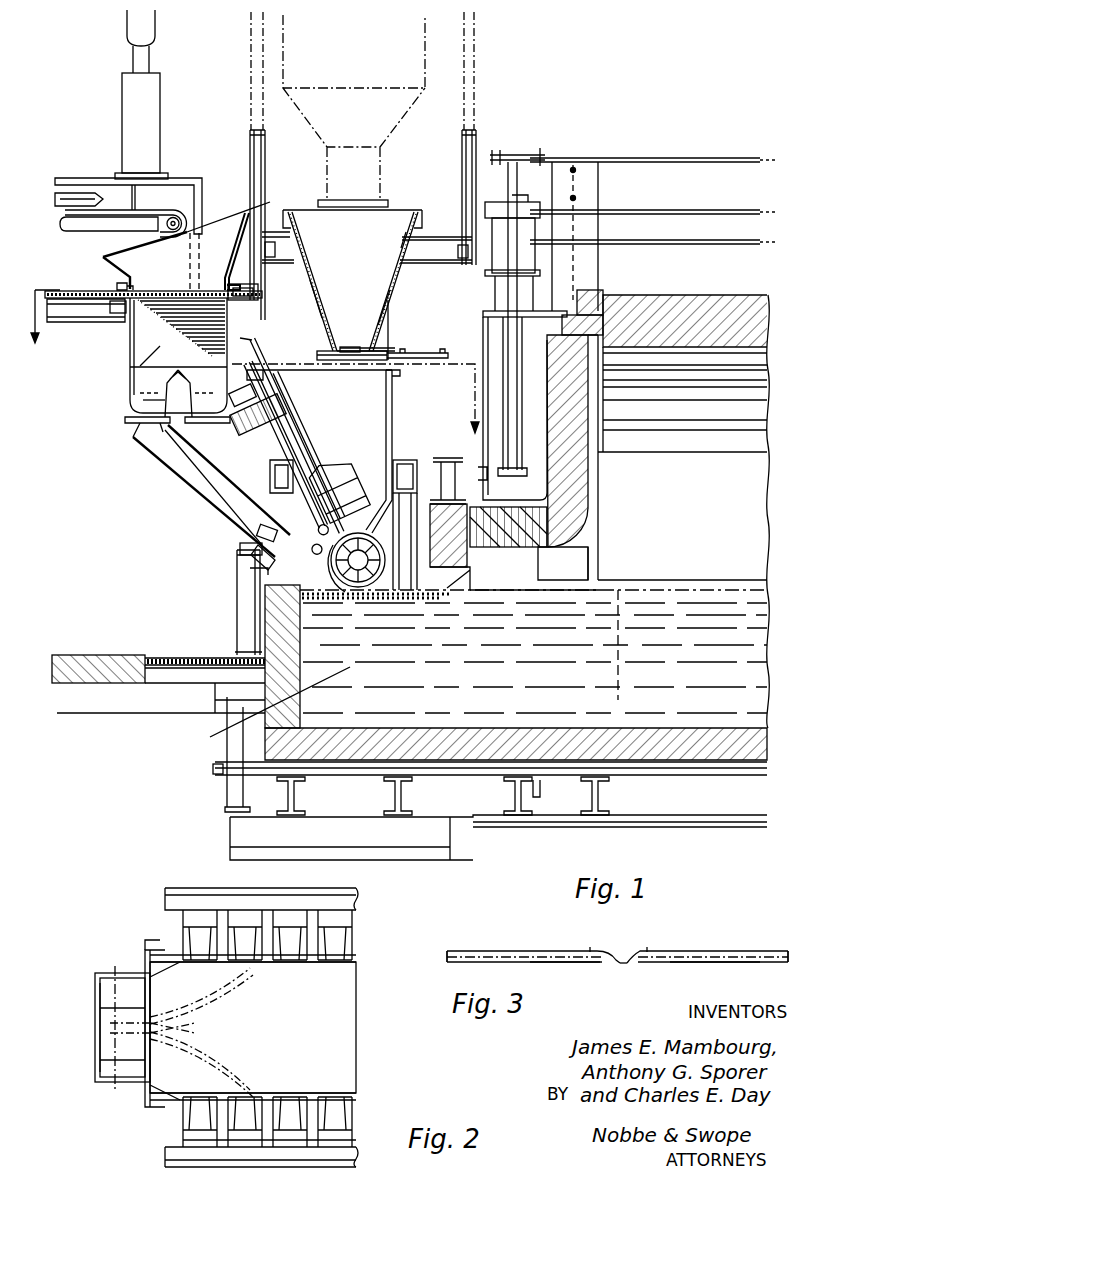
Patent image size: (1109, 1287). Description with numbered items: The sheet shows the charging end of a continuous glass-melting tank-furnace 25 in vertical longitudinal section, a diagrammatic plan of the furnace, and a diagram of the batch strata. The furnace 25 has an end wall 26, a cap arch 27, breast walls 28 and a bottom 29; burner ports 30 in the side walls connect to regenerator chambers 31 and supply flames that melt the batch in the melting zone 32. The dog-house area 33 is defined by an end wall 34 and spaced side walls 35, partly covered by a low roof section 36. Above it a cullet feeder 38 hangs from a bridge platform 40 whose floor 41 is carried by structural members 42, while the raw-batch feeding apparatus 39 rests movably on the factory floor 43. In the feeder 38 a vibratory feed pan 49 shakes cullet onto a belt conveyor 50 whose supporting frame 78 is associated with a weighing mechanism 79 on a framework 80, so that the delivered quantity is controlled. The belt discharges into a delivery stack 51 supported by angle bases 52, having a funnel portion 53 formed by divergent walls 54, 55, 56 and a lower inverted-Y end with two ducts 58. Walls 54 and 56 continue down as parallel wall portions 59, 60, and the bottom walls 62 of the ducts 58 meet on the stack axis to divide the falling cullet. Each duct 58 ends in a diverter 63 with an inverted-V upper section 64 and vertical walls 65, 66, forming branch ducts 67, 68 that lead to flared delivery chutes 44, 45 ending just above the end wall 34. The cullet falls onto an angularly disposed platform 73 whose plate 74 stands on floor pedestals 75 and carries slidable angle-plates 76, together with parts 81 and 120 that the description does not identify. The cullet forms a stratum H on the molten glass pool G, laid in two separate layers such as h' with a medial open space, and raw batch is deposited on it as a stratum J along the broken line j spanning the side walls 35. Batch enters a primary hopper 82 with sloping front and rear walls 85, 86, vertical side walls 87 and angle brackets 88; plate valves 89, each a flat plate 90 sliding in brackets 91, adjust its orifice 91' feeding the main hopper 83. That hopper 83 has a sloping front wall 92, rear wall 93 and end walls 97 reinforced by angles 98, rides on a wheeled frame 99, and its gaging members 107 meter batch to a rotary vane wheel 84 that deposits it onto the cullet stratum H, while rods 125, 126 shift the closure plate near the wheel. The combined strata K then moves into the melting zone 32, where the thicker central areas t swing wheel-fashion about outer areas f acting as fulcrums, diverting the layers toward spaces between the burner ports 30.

In FIG. 1, the tank-furnace 25 is at (639, 188).
In FIG. 2, the tank-furnace 25 is at (134, 917).
In FIG. 1, the end wall 26 is at (575, 455).
In FIG. 1, the cap arch 27 is at (678, 314).
In FIG. 1, the breast wall 28 is at (645, 582).
In FIG. 2, the breast wall 28 is at (158, 955).
In FIG. 1, the floor or bottom 29 is at (680, 756).
In FIG. 2, the burner ports 30 is at (197, 942).
In FIG. 2, the regenerator chambers 31 is at (215, 893).
In FIG. 1, the melting zone 32 is at (740, 574).
In FIG. 2, the melting zone 32 is at (325, 1032).
In FIG. 1, the dog-house area 33 is at (284, 628).
In FIG. 2, the dog-house area 33 is at (90, 975).
In FIG. 1, the end wall 34 is at (275, 646).
In FIG. 2, the end wall 34 is at (98, 990).
In FIG. 1, the side walls 35 is at (457, 587).
In FIG. 2, the side walls 35 is at (104, 975).
In FIG. 1, the low roof section 36 is at (497, 522).
In FIG. 1, the glass cullet feeder 38 is at (114, 361).
In FIG. 1, the feeding apparatus 39 is at (430, 397).
In FIG. 1, the bridge platform 40 is at (75, 312).
In FIG. 1, the floor 41 is at (88, 292).
In FIG. 1, the structural members 42 is at (262, 303).
In FIG. 1, the factory floor 43 is at (86, 655).
In FIG. 1, the delivery chute 44 is at (222, 470).
In FIG. 1, the delivery chute 45 is at (212, 496).
In FIG. 1, the vibratory feed pan 49 is at (78, 194).
In FIG. 1, the belt conveyor 50 is at (171, 218).
In FIG. 1, the delivery stack 51 is at (214, 250).
In FIG. 1, the angle bases 52 is at (118, 286).
In FIG. 1, the funnel portion 53 is at (230, 236).
In FIG. 1, the wall 54 is at (103, 257).
In FIG. 1, the wall 55 is at (205, 232).
In FIG. 1, the wall 56 is at (270, 202).
In FIG. 1, the leg sections or ducts 58 is at (150, 356).
In FIG. 1, the wall portion 59 is at (132, 336).
In FIG. 1, the wall portion 60 is at (242, 340).
In FIG. 1, the bottom walls 62 is at (138, 394).
In FIG. 1, the diverter 63 is at (128, 421).
In FIG. 1, the upper section 64 is at (180, 372).
In FIG. 1, the wall 65 is at (141, 401).
In FIG. 1, the wall 66 is at (192, 396).
In FIG. 1, the branch duct 67 is at (136, 432).
In FIG. 1, the branch duct 68 is at (162, 433).
In FIG. 1, the platform 73 is at (240, 550).
In FIG. 1, the plate 74 is at (260, 560).
In FIG. 1, the floor pedestals 75 is at (245, 606).
In FIG. 1, the angle-plates 76 is at (258, 570).
In FIG. 1, the supporting frame 78 is at (70, 233).
In FIG. 1, the weighing mechanism 79 is at (130, 62).
In FIG. 1, the framework 80 is at (108, 178).
In FIG. 1, the bracket 81 is at (257, 533).
In FIG. 1, the primary hopper 82 is at (391, 230).
In FIG. 1, the main hopper 83 is at (382, 398).
In FIG. 1, the rotary vane wheel 84 is at (355, 599).
In FIG. 1, the front wall 85 is at (313, 296).
In FIG. 1, the rear wall 86 is at (386, 315).
In FIG. 1, the side walls 87 is at (406, 232).
In FIG. 1, the angle brackets 88 is at (289, 230).
In FIG. 1, the plate-type valves 89 is at (375, 348).
In FIG. 1, the plate 90 is at (412, 354).
In FIG. 1, the bracket 91 is at (344, 345).
In FIG. 1, the orifice 91' is at (354, 326).
In FIG. 1, the front wall 92 is at (292, 447).
In FIG. 1, the rear wall 93 is at (393, 416).
In FIG. 1, the end walls 97 is at (303, 378).
In FIG. 1, the angles 98 is at (400, 458).
In FIG. 1, the frame 99 is at (415, 462).
In FIG. 1, the gaging members 107 is at (338, 486).
In FIG. 1, the shaft 120 is at (290, 424).
In FIG. 1, the rod 125 is at (240, 421).
In FIG. 1, the rod 126 is at (256, 427).
In FIG. 1, the pool of molten glass G is at (255, 519).
In FIG. 1, the cullet stratum H is at (327, 584).
In FIG. 3, the cullet stratum H is at (588, 960).
In FIG. 1, the batch stratum J is at (418, 588).
In FIG. 3, the batch stratum J is at (552, 944).
In FIG. 1, the combined strata K is at (490, 590).
In FIG. 3, the combined strata K is at (492, 940).
In FIG. 2, the outer areas f is at (152, 970).
In FIG. 3, the outer areas f is at (450, 950).
In FIG. 2, the thicker areas t is at (201, 1032).
In FIG. 3, the thicker areas t is at (592, 948).
In FIG. 2, the cullet layer h' is at (100, 1005).
In FIG. 3, the cullet layer h' is at (565, 975).
In FIG. 2, the batch deposit line j is at (112, 1023).